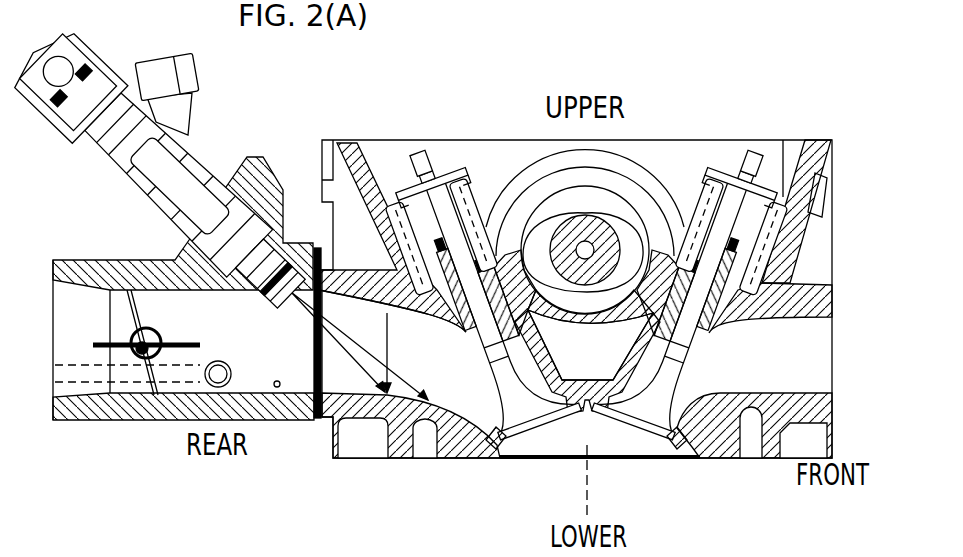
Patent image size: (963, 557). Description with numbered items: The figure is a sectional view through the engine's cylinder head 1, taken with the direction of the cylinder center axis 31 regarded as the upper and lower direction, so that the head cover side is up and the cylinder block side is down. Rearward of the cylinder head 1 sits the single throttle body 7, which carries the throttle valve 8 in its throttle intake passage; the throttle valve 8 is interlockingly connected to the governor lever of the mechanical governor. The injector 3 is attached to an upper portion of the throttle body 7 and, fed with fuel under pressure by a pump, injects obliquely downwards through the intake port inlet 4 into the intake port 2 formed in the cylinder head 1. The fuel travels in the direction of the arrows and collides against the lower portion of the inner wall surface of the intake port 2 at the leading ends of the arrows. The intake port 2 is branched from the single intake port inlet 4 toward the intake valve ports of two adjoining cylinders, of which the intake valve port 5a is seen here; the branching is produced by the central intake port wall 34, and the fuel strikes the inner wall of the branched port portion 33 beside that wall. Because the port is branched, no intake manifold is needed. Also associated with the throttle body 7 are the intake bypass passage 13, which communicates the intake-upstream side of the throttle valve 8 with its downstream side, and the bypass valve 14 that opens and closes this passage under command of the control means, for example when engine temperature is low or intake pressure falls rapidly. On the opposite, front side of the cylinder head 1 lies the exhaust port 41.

The cylinder head 1 is at (574, 322).
The intake port 2 is at (467, 397).
The injector 3 is at (193, 147).
The intake port inlet 4 is at (345, 312).
The intake valve port 5a is at (510, 458).
The throttle body 7 is at (187, 327).
The throttle valve 8 is at (112, 340).
The intake bypass passage 13 is at (192, 367).
The bypass valve 14 is at (228, 372).
The cylinder center axis 31 is at (592, 473).
The branched port portion 33 is at (452, 395).
The central intake port wall 34 is at (405, 334).
The exhaust port 41 is at (793, 371).